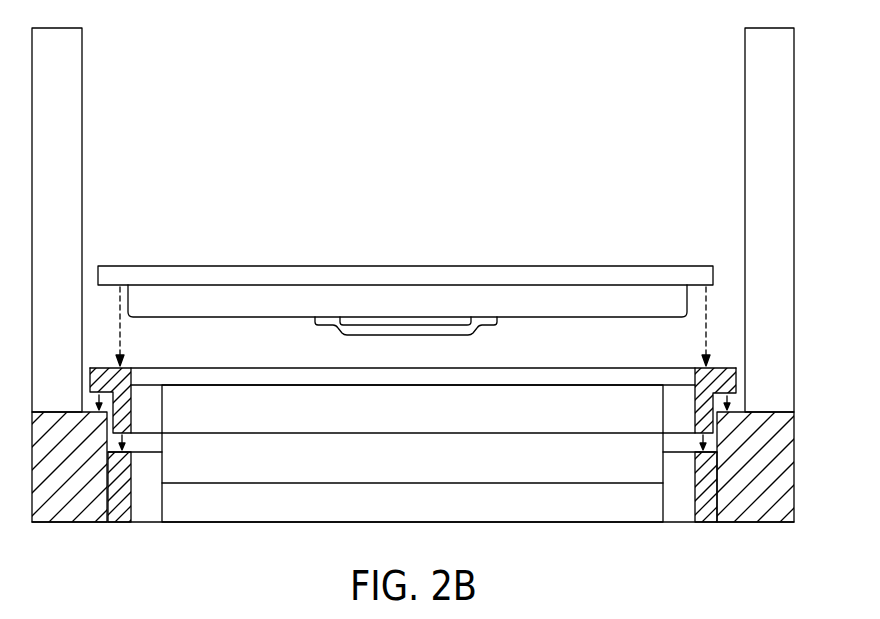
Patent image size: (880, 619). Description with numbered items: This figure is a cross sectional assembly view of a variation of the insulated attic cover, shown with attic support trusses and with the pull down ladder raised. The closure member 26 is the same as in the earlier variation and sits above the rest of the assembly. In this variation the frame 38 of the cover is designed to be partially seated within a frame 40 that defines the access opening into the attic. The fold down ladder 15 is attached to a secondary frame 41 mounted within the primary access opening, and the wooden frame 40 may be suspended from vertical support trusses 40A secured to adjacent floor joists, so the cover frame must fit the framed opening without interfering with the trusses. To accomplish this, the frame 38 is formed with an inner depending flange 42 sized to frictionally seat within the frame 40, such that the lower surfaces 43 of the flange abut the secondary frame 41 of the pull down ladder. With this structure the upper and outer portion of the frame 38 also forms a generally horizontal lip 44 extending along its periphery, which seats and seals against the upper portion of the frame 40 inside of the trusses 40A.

The vertical support trusses 40A is at (82, 147).
The frame 40 is at (60, 512).
The secondary frame 41 is at (122, 510).
The fold down ladder 15 is at (311, 508).
The frame 38 is at (580, 368).
The horizontal lip 44 is at (106, 368).
The inner depending flange 42 is at (131, 433).
The lower surfaces 43 is at (136, 437).
The closure member 26 is at (397, 257).